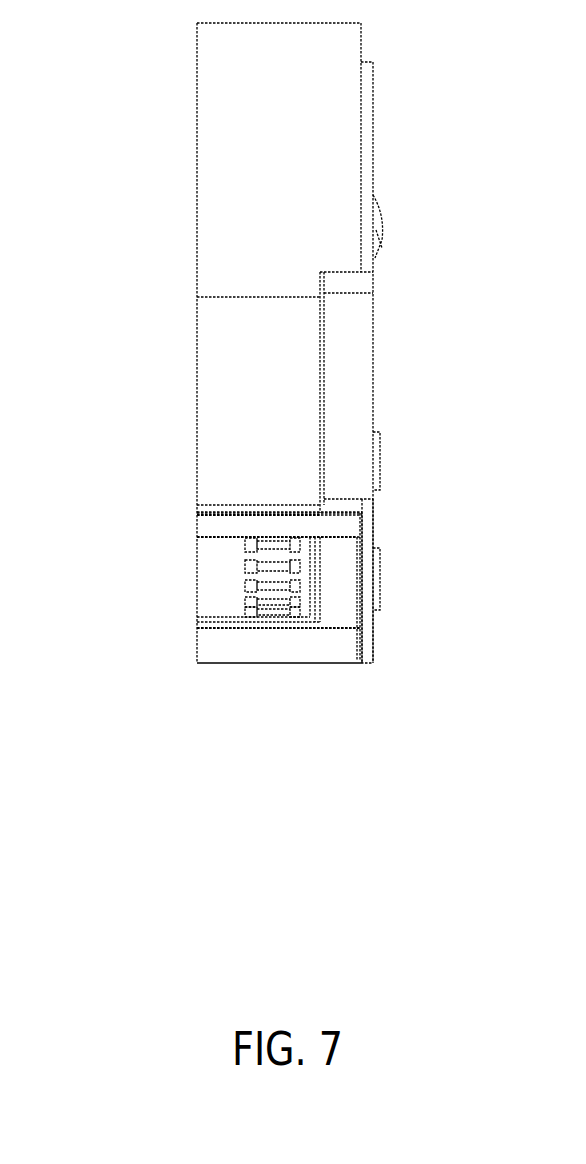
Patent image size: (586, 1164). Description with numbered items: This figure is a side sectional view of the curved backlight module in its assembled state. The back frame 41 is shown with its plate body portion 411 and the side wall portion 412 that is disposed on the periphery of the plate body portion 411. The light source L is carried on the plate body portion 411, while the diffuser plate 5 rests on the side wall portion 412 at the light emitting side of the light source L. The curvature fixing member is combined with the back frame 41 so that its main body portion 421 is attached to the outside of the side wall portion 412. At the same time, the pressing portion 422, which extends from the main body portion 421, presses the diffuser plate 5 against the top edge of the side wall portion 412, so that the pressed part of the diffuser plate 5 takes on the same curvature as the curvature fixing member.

The diffuser plate 5 is at (197, 528).
The light source L is at (207, 602).
The back frame 41 is at (320, 650).
The plate body portion 411 is at (265, 647).
The side wall portion 412 is at (333, 600).
The main body portion 421 is at (367, 613).
The pressing portion 422 is at (343, 490).